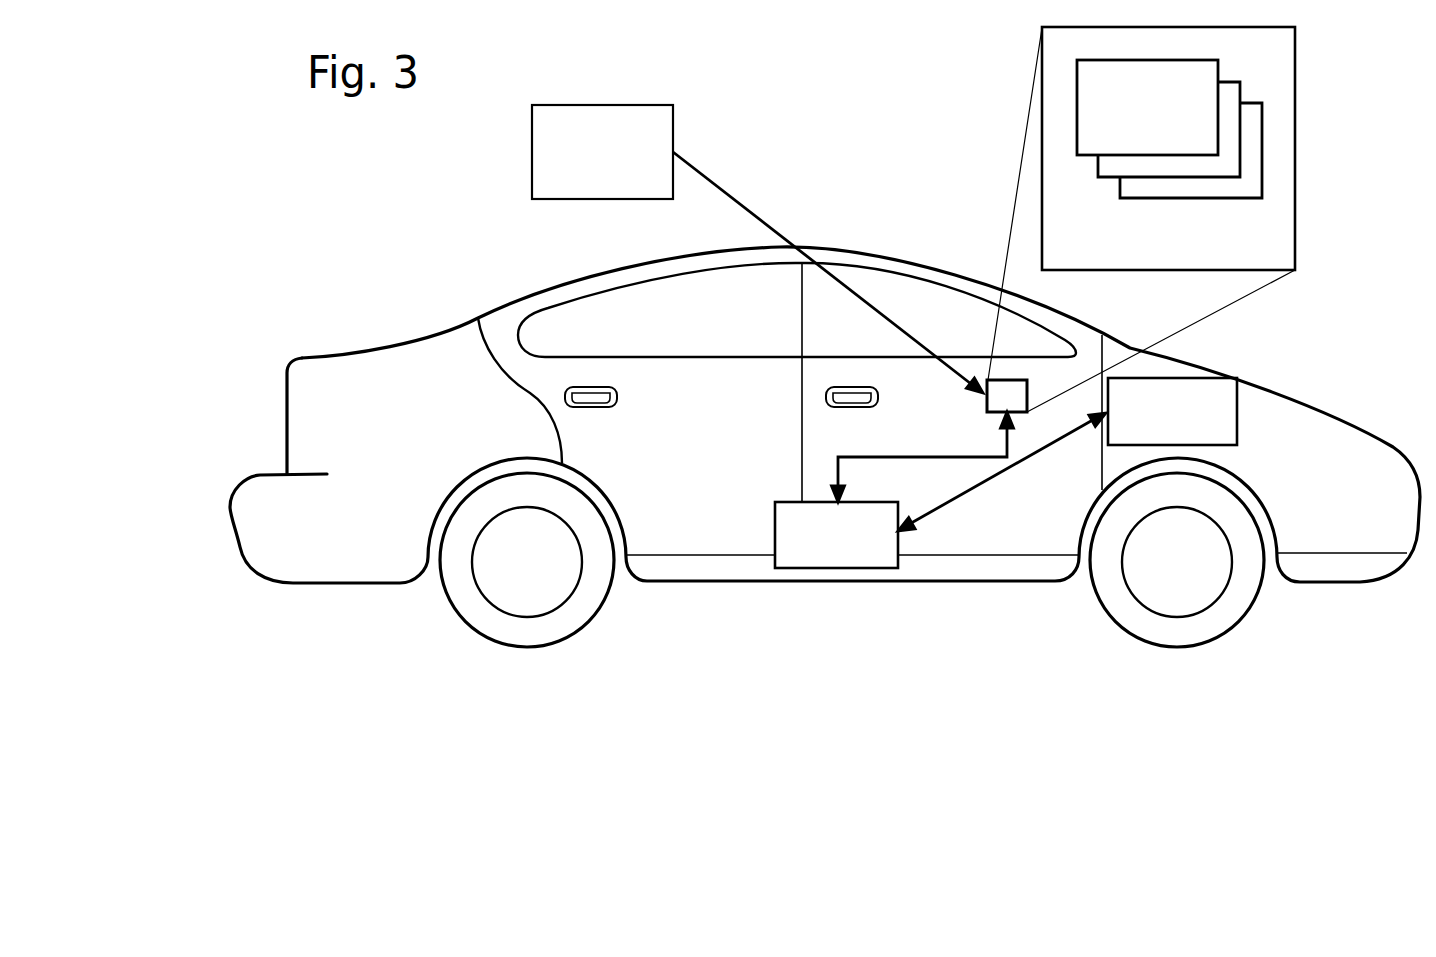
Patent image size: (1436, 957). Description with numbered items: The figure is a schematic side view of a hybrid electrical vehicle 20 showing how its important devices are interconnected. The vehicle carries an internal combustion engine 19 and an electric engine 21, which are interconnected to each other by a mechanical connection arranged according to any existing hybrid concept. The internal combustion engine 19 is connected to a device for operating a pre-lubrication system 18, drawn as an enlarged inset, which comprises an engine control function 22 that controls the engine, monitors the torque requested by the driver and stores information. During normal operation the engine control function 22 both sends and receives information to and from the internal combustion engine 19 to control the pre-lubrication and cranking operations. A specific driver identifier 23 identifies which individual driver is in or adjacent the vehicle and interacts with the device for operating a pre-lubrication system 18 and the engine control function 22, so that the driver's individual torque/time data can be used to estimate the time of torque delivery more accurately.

The device for operating a pre-lubrication system 18 is at (1141, 219).
The internal combustion engine 19 is at (1187, 427).
The hybrid electrical vehicle 20 is at (357, 418).
The electric engine 21 is at (852, 549).
The engine control function 22 is at (1163, 121).
The specific driver identifier 23 is at (618, 166).